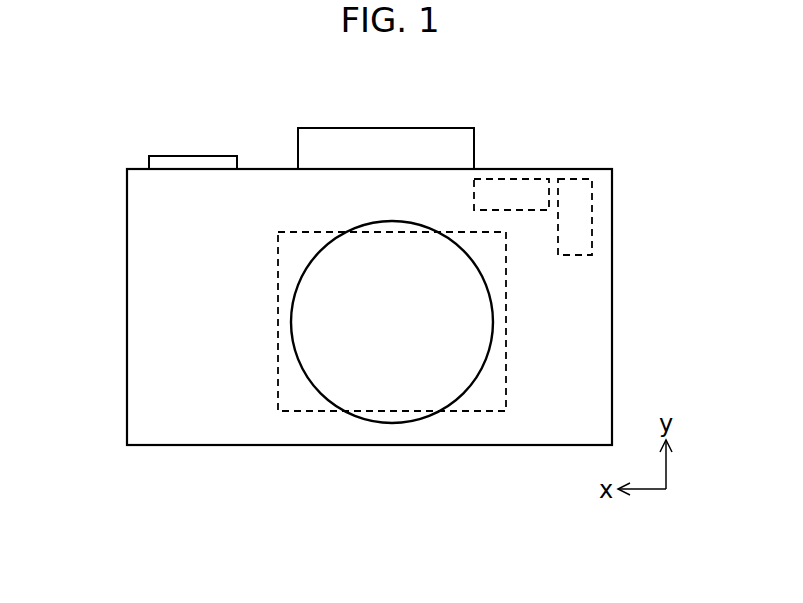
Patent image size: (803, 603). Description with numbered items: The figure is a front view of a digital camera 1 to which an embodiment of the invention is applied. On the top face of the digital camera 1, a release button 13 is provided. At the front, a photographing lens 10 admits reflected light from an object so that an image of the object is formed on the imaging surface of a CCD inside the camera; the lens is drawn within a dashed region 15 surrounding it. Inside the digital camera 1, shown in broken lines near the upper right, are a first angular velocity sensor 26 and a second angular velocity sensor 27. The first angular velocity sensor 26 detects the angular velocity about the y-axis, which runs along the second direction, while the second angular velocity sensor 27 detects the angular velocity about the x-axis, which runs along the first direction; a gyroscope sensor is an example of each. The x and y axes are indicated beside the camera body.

The digital camera 1 is at (612, 218).
The release button 13 is at (189, 156).
The photographing lens 10 is at (493, 320).
The lens unit region 15 is at (278, 325).
The second angular velocity sensor 27 is at (517, 179).
The first angular velocity sensor 26 is at (577, 179).